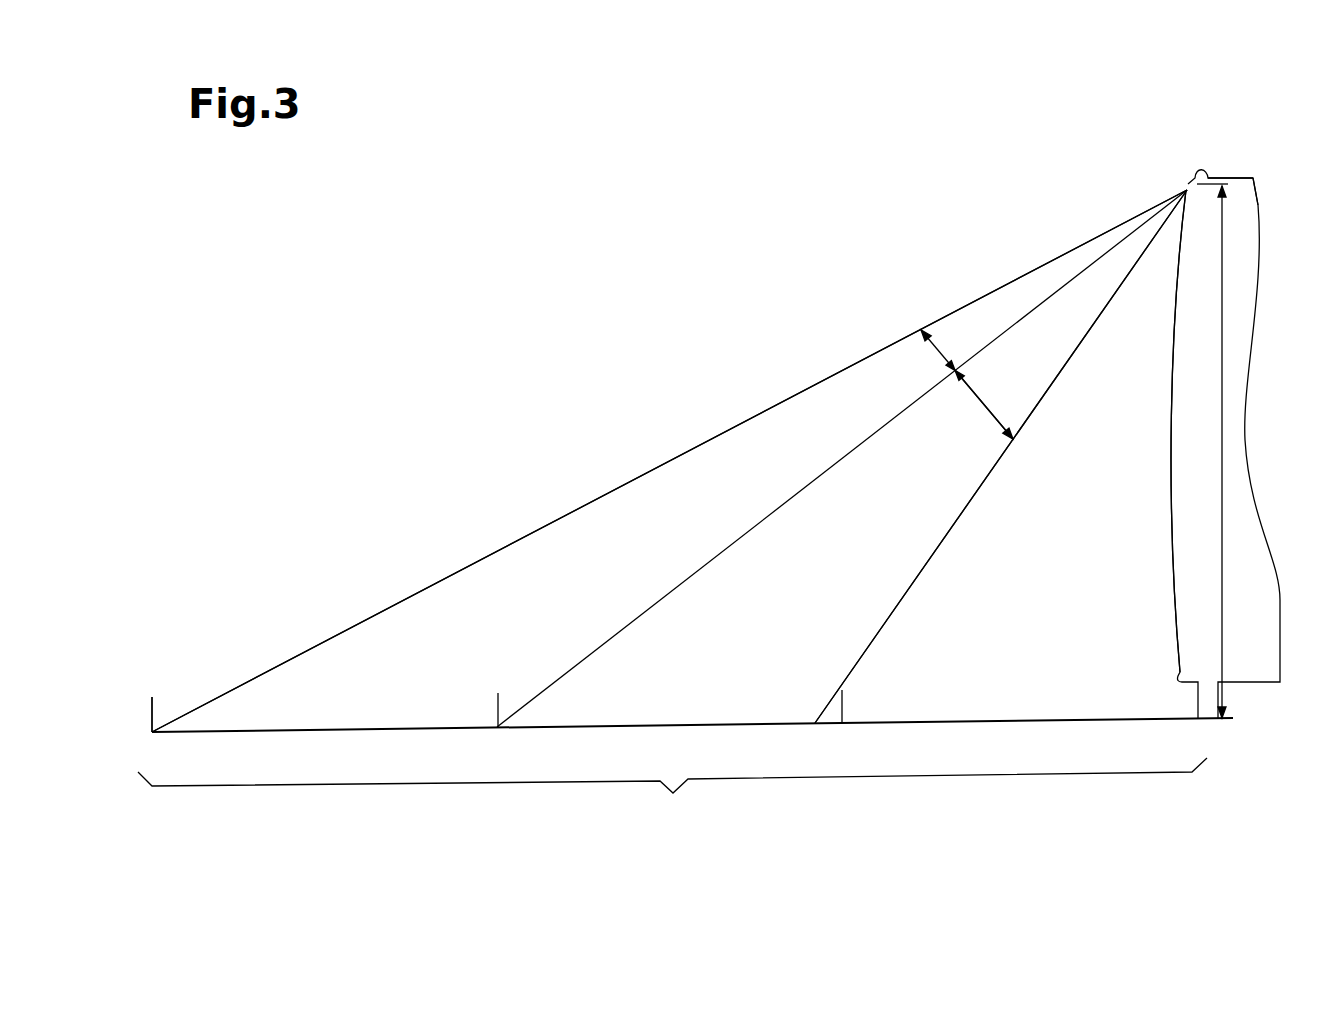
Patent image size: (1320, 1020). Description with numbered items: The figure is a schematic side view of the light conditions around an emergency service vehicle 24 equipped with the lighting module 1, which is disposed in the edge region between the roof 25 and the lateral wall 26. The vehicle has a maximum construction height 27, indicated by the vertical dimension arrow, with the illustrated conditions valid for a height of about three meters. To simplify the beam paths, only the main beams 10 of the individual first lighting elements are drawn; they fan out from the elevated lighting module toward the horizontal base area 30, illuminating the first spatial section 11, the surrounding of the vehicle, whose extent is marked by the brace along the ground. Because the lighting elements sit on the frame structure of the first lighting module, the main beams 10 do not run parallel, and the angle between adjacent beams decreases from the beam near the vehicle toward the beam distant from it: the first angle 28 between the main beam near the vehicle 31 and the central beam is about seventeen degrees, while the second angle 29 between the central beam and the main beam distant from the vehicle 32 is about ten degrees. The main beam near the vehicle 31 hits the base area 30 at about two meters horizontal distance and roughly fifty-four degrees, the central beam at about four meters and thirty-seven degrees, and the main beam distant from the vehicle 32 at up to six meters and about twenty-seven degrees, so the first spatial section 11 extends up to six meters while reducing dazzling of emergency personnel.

The lighting module 1 is at (1187, 165).
The main beam 10 is at (475, 563).
The first spatial section 11 is at (682, 758).
The emergency service vehicle 24 is at (1238, 193).
The roof 25 is at (1250, 180).
The lateral wall 26 is at (1170, 540).
The construction height 27 is at (1228, 481).
The first angle 28 is at (980, 413).
The second angle 29 is at (933, 352).
The base area 30 is at (322, 729).
The main beam near the vehicle 31 is at (866, 650).
The main beam distant from the vehicle 32 is at (355, 626).